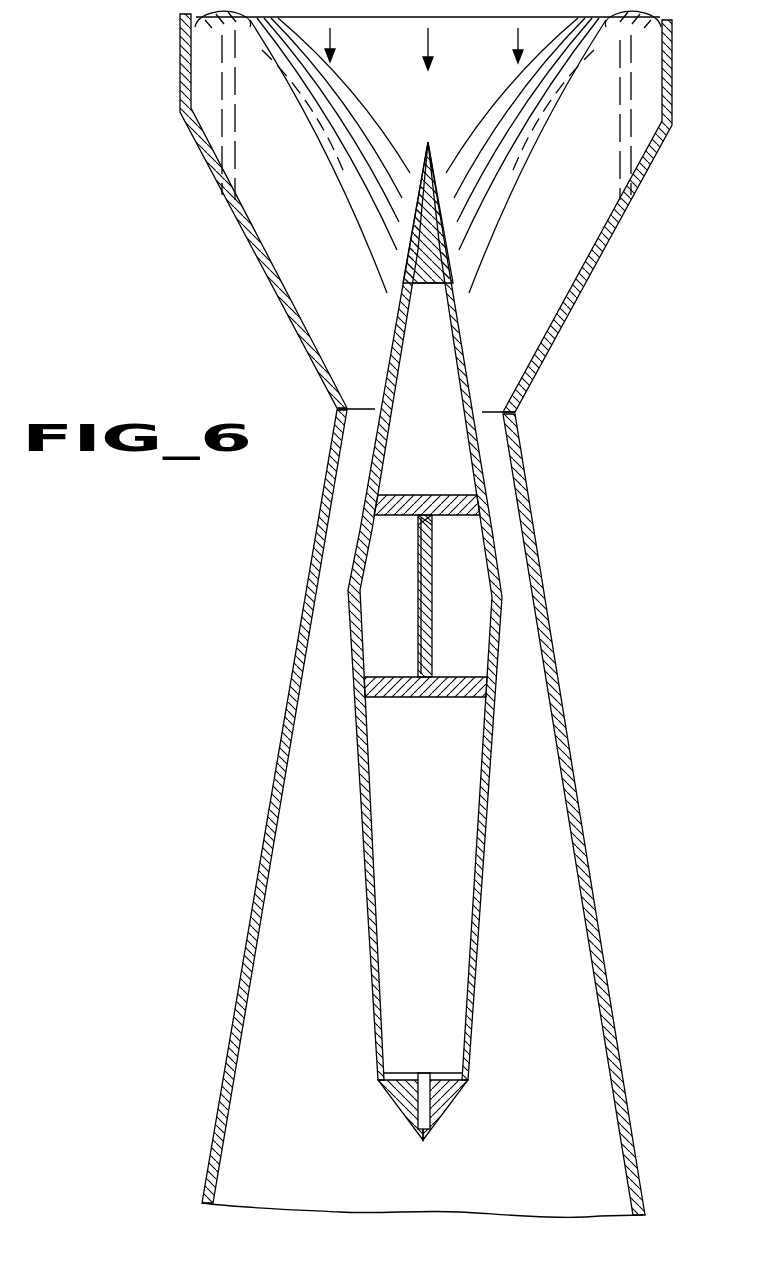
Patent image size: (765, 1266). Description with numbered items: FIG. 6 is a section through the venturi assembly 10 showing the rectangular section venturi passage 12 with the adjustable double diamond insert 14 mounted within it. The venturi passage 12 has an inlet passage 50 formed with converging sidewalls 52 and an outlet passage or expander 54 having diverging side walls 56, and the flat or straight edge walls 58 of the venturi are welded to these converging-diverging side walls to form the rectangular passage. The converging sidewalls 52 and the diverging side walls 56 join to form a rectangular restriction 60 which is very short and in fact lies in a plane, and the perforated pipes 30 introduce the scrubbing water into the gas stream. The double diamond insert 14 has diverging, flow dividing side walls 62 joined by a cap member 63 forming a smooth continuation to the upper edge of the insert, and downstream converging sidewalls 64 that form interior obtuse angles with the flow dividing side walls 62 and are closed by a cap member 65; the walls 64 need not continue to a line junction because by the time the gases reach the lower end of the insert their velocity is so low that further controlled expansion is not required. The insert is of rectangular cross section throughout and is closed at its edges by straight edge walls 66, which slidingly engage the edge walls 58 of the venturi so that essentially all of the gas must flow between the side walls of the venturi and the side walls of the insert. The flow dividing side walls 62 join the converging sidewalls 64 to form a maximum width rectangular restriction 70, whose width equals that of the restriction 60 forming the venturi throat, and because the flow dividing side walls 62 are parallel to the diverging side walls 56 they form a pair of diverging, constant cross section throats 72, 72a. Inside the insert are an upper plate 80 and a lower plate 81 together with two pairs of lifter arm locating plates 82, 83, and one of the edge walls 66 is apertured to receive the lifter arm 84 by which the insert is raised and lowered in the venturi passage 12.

The venturi assembly 10 is at (630, 442).
The venturi passage 12 is at (538, 395).
The double diamond insert 14 is at (362, 832).
The perforated pipes 30 is at (618, 32).
The inlet passage 50 is at (305, 282).
The converging sidewalls 52 is at (318, 362).
The outlet passage 54 is at (315, 778).
The diverging side walls 56 is at (297, 713).
The straight edge walls 58 is at (530, 212).
The rectangular restriction 60 is at (517, 412).
The flow dividing side walls 62 is at (391, 345).
The cap member 63 is at (431, 146).
The downstream converging sidewalls 64 is at (378, 922).
The cap member 65 is at (410, 1111).
The straight edge walls 66 is at (414, 820).
The rectangular restriction 70 is at (422, 623).
The throat 72 is at (332, 550).
The throat 72a is at (514, 544).
The upper plate 80 is at (396, 513).
The lower plate 81 is at (420, 690).
The lifter arm locating plates 82 is at (369, 612).
The lifter arm locating plates 83 is at (451, 615).
The lifter arm 84 is at (433, 518).